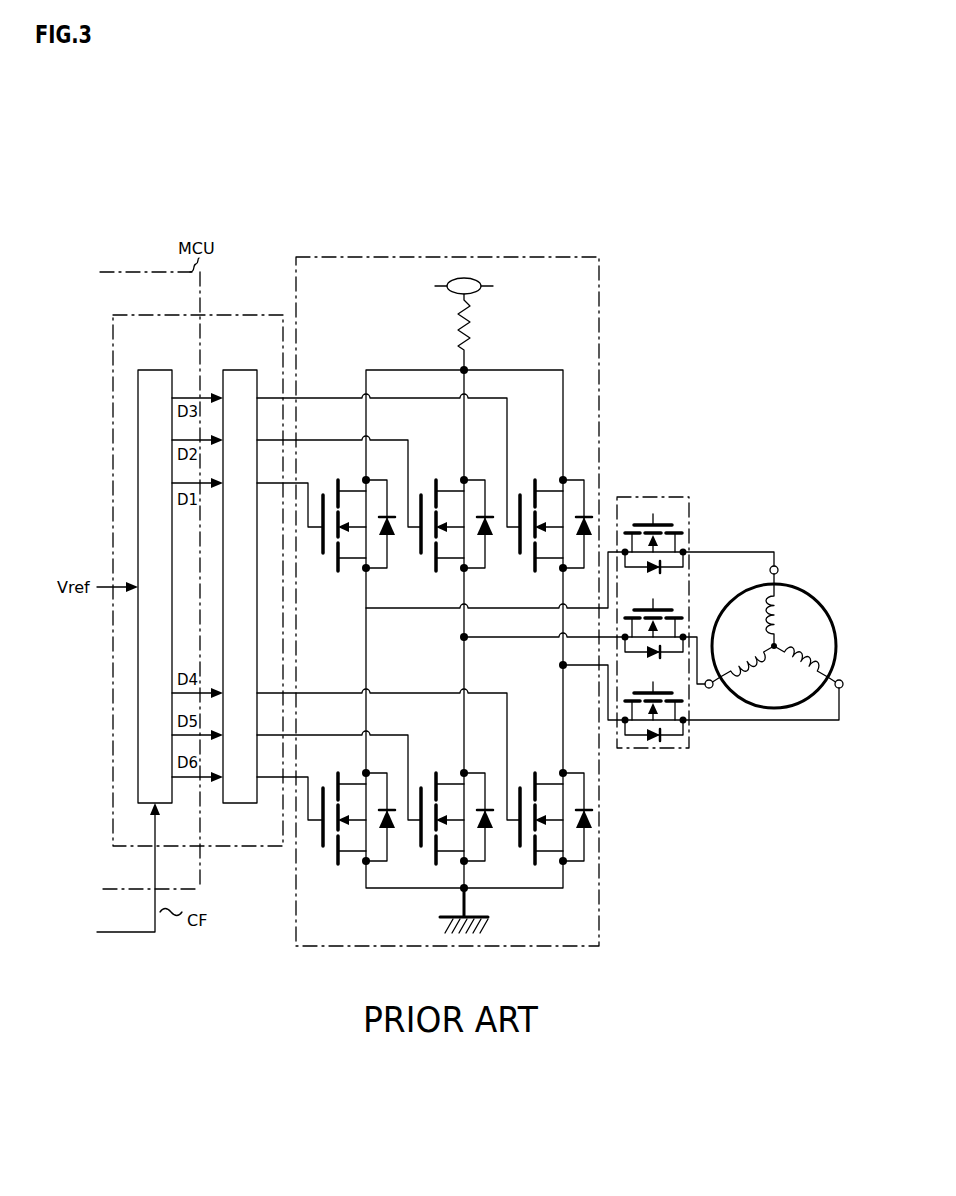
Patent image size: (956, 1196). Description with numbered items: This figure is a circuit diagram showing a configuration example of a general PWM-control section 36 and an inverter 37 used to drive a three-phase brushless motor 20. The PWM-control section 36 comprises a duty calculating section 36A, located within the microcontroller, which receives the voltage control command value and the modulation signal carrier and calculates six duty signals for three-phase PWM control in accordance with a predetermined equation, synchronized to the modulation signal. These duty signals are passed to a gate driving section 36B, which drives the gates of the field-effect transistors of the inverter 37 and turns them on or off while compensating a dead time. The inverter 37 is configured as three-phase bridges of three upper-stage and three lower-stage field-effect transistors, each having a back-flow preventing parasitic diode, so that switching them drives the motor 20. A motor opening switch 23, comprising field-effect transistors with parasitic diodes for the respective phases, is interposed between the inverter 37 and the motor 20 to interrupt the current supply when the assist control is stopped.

The motor 20 is at (808, 571).
The motor opening switch 23 is at (665, 497).
The PWM-control section 36 is at (250, 315).
The duty calculating section 36A is at (178, 355).
The gate driving section 36B is at (250, 370).
The inverter 37 is at (576, 257).